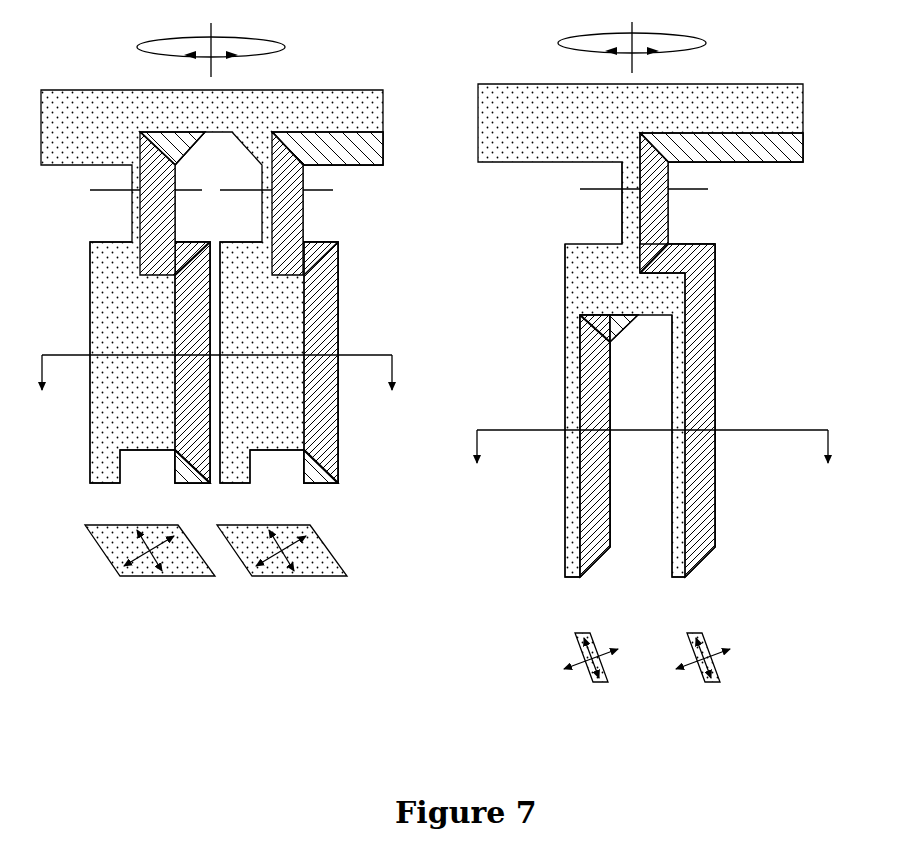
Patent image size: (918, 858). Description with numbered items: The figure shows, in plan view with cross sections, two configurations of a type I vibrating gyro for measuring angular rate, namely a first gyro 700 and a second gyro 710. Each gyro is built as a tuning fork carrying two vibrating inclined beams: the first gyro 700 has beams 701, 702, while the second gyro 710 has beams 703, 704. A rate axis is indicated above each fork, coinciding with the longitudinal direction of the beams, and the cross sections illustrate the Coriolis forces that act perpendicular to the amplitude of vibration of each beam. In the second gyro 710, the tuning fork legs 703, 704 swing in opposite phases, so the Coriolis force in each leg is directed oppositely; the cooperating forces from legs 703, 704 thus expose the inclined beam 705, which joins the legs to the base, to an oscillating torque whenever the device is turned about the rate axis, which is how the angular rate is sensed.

The type I vibrating gyro 700 is at (237, 346).
The vibrating inclined beam 701 is at (89, 300).
The vibrating inclined beam 702 is at (339, 293).
The vibrating inclined beam 703 is at (565, 392).
The vibrating inclined beam 704 is at (717, 390).
The inclined beam 705 is at (669, 212).
The type I vibrating gyro 710 is at (675, 364).